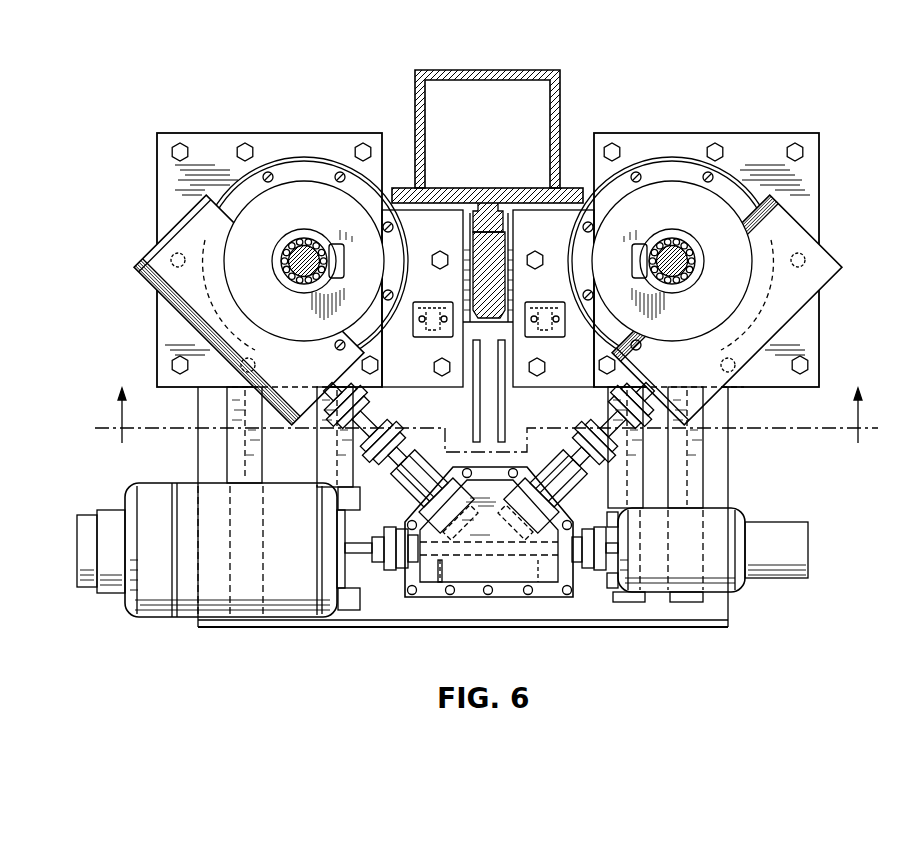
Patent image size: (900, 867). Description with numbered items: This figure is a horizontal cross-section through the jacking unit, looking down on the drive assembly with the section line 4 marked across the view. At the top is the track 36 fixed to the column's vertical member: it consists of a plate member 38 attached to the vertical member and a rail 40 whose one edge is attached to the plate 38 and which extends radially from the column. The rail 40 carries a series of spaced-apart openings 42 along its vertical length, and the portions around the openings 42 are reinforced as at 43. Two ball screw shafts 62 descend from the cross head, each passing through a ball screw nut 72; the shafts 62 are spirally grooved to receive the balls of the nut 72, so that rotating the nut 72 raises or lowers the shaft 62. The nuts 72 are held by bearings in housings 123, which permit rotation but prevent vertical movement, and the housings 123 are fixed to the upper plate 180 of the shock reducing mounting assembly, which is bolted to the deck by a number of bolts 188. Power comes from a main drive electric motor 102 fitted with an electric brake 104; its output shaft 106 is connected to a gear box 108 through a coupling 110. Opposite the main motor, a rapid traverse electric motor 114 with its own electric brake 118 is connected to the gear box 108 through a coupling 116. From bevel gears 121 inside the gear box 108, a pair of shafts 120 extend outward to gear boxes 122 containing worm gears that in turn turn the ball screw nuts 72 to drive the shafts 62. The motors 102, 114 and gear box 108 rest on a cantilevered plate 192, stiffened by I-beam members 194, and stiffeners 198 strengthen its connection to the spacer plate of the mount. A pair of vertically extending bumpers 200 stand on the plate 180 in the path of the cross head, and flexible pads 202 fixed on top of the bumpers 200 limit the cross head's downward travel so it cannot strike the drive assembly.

The section line 4- 4 is at (486, 420).
The track 36 is at (562, 110).
The plate member 38 is at (405, 188).
The rail 40 is at (482, 300).
The openings 42 is at (500, 296).
The reinforced portions 43 is at (476, 222).
The ball screw shaft 62 is at (303, 250).
The ball screw nut 72 is at (282, 268).
The main drive electric motor 102 is at (285, 601).
The electric brake 104 is at (108, 520).
The output shaft 106 is at (366, 552).
The gear box 108 is at (512, 576).
The coupling 110 is at (394, 578).
The rapid traverse electric motor 114 is at (660, 585).
The coupling 116 is at (590, 555).
The electric brake 118 is at (787, 531).
The shafts 120 is at (368, 426).
The bevel gears 121 is at (450, 580).
The gear boxes 122 is at (170, 299).
The housings 123 is at (335, 200).
The upper plate 180 is at (157, 165).
The bolts 188 is at (180, 147).
The plate 192 is at (214, 450).
The frame posts 194 is at (235, 400).
The stiffeners 198 is at (473, 428).
The bumpers 200 is at (553, 338).
The flexible pads 202 is at (418, 338).